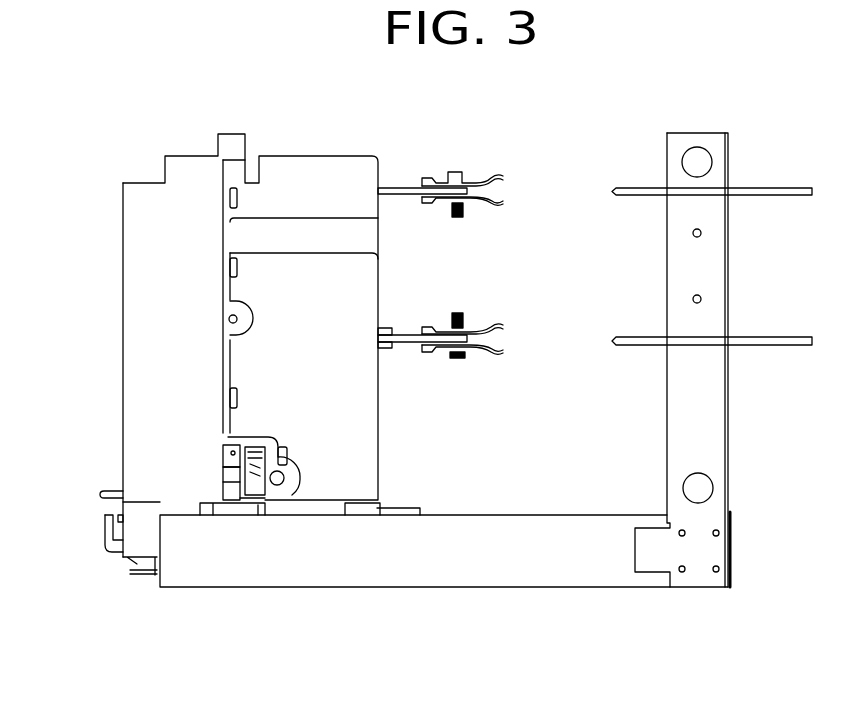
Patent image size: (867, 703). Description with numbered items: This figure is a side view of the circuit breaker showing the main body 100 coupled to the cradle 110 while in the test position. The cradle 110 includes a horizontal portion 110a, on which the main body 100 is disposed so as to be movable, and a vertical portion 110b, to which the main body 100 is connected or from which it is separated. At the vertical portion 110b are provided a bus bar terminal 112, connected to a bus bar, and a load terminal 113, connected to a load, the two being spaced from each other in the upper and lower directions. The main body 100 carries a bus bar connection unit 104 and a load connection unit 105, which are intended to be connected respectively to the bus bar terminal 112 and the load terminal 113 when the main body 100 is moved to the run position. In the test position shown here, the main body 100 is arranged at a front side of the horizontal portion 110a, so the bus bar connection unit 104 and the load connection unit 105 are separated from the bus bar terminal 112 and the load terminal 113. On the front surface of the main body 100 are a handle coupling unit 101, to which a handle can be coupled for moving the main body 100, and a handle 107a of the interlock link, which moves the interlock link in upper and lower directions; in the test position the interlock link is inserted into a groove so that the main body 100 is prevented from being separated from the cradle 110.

The main body 100 is at (118, 160).
The handle coupling unit 101 is at (104, 531).
The bus bar connection unit 104 is at (478, 183).
The load connection unit 105 is at (478, 356).
The handle 107a is at (99, 494).
The cradle 110 is at (492, 390).
The horizontal portion 110a is at (387, 577).
The vertical portion 110b is at (720, 403).
The bus bar terminal 112 is at (633, 189).
The load terminal 113 is at (627, 348).